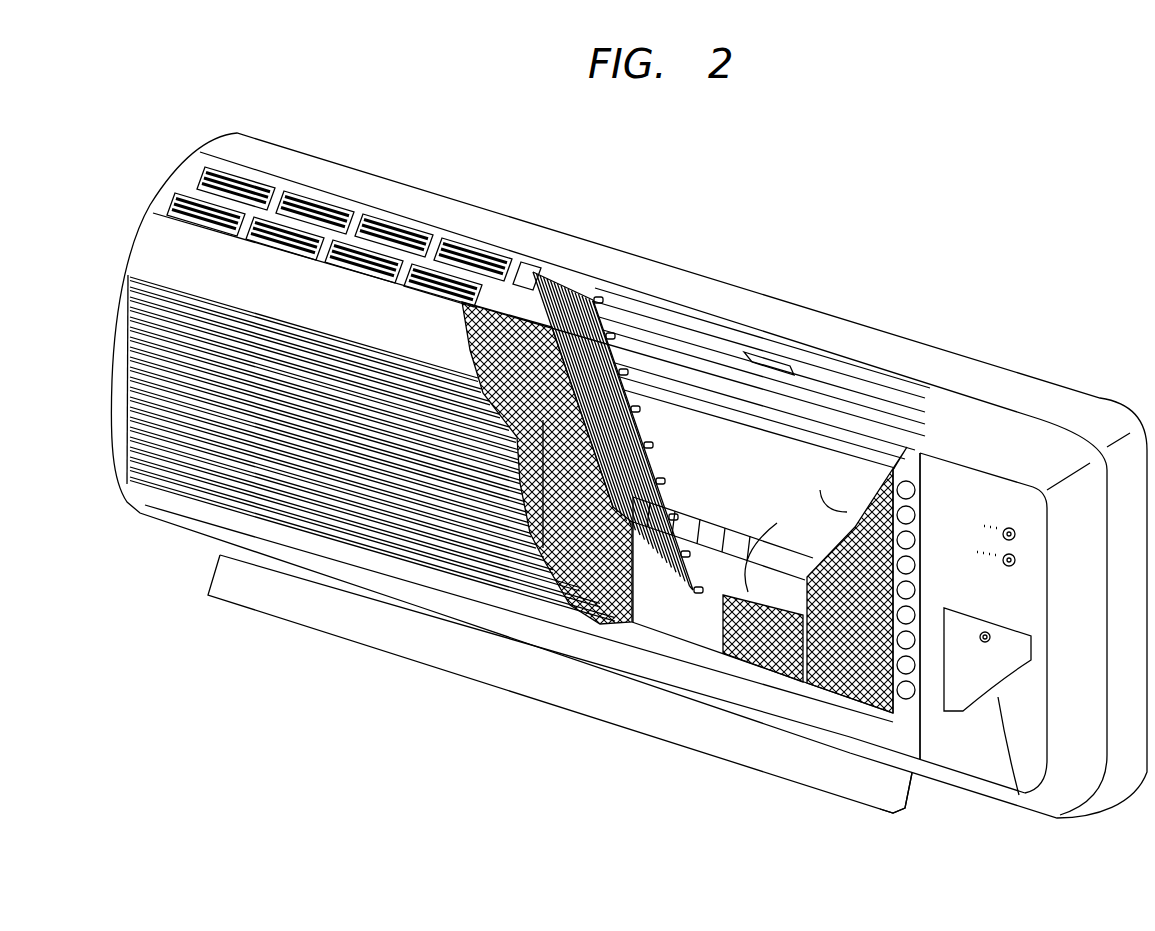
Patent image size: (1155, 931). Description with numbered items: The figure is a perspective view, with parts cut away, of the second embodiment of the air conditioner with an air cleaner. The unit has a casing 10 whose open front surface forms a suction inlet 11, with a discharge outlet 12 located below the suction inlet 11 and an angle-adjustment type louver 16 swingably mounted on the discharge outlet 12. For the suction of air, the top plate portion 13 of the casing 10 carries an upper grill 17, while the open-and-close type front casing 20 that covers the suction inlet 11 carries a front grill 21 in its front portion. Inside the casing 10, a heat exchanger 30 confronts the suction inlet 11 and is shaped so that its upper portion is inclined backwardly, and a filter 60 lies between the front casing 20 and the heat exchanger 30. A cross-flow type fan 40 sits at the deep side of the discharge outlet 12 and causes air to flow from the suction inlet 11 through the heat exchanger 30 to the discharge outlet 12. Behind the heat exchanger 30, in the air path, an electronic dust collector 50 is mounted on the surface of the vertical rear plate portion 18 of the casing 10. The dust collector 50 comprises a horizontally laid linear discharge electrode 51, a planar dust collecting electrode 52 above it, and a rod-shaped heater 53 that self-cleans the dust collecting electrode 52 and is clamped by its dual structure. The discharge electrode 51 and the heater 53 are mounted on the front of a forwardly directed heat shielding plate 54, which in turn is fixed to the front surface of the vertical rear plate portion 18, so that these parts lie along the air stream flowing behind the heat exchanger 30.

The casing 10 is at (707, 280).
The suction inlet 11 is at (590, 620).
The discharge outlet 12 is at (783, 733).
The top plate portion 13 is at (313, 172).
The louver 16 is at (897, 797).
The upper grill 17 is at (387, 240).
The vertical rear plate portion 18 is at (820, 490).
The front casing 20 is at (287, 546).
The front grill 21 is at (367, 527).
The heat exchanger 30 is at (547, 530).
The cross-flow type fan 40 is at (672, 575).
The electronic dust collector 50 is at (803, 410).
The linear discharge electrode 51 is at (658, 390).
The planar dust collecting electrode 52 is at (704, 370).
The rod-shaped heater 53 is at (912, 400).
The heat shielding plate 54 is at (733, 353).
The filter 60 is at (765, 665).